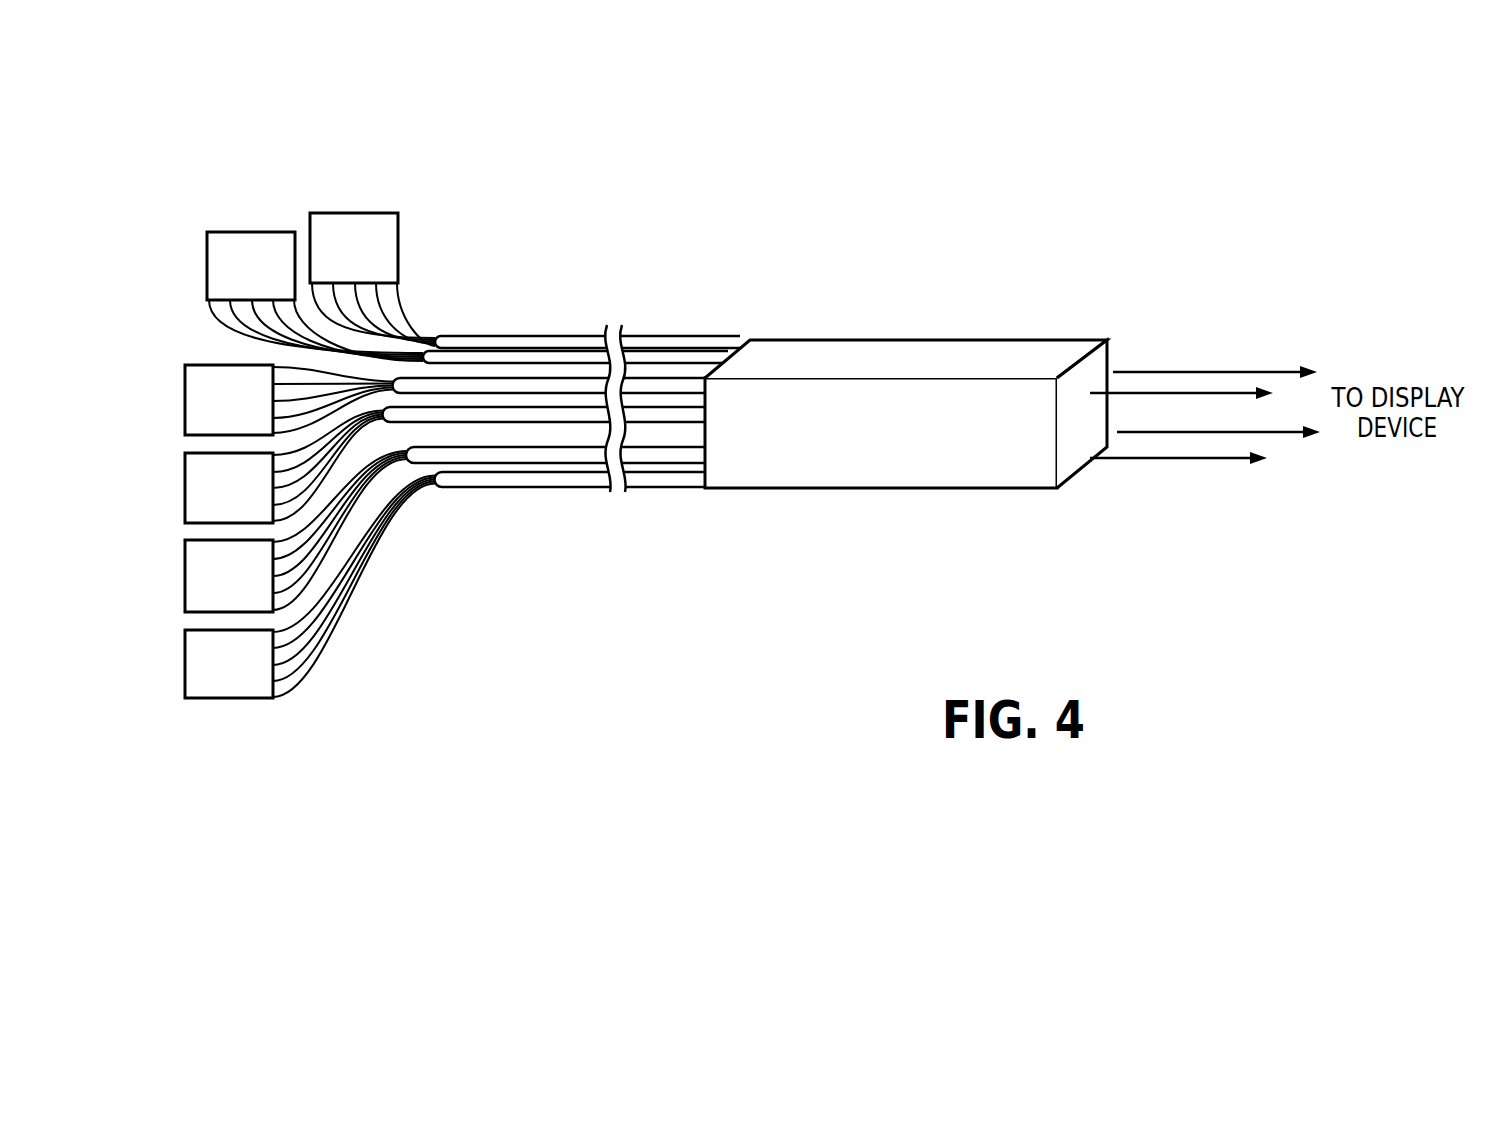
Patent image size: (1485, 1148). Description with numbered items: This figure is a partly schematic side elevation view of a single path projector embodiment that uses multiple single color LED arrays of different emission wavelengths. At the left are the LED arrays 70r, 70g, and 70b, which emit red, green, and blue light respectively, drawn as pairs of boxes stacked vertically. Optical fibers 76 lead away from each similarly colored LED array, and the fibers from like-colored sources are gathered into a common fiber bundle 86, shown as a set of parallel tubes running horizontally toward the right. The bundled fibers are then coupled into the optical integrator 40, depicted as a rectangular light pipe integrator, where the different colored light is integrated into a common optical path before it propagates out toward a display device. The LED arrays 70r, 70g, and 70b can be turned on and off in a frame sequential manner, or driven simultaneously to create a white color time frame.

The red LED array 70r is at (207, 268).
The green LED array 70g is at (185, 402).
The blue LED array 70b is at (185, 573).
The optical fibers 76 is at (403, 326).
The common fiber bundle 86 is at (652, 311).
The optical integrator 40 is at (880, 355).